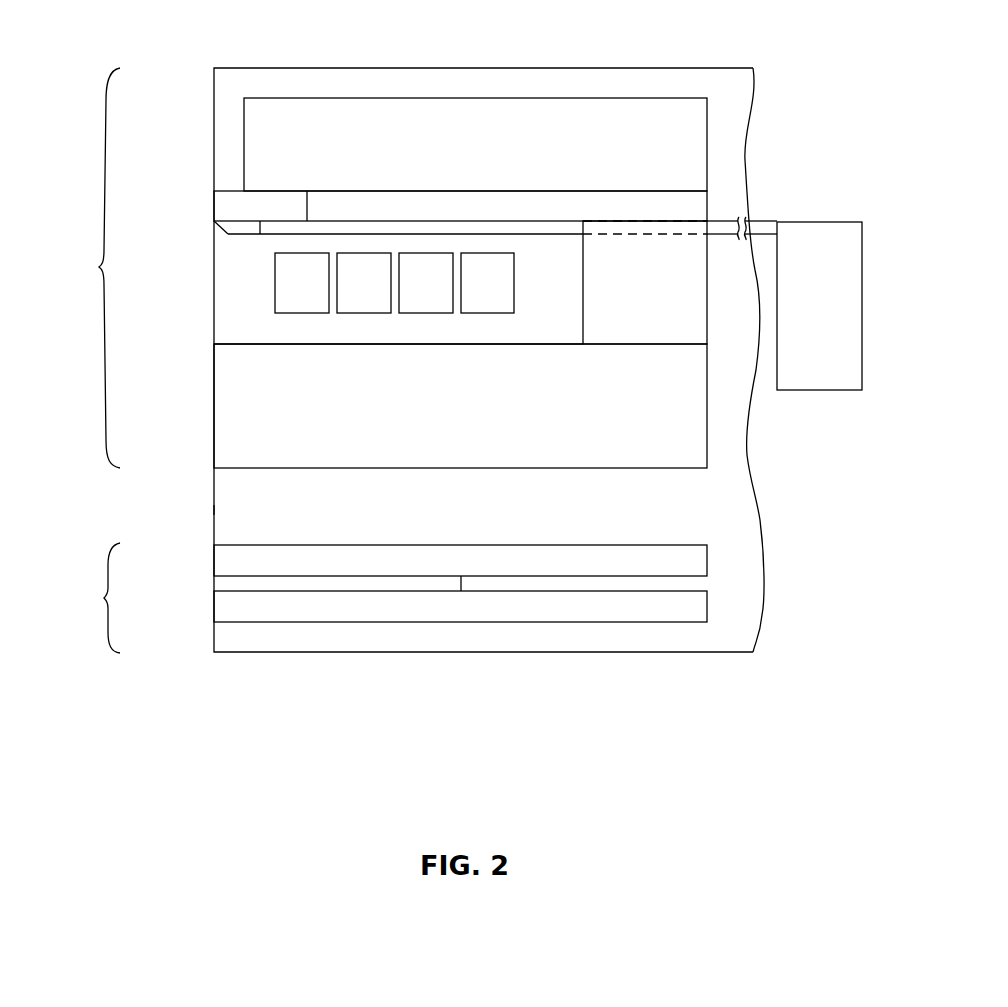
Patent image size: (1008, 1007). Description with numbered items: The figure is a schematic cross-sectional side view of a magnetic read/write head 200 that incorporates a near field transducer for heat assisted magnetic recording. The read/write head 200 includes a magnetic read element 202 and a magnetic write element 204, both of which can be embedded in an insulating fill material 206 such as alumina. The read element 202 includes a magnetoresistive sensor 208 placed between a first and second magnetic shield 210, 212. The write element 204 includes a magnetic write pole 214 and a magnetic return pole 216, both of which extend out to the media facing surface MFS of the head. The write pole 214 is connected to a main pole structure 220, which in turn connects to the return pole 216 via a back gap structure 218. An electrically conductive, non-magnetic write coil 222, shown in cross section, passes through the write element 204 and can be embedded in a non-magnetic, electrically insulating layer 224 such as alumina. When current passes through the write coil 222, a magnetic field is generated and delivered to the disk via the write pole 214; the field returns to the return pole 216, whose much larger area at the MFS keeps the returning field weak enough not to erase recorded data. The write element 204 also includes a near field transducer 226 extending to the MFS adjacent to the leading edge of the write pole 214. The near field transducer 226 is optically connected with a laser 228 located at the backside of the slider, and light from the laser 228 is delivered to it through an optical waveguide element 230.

The magnetic read/write head 200 is at (465, 67).
The magnetic read element 202 is at (108, 546).
The magnetic write element 204 is at (107, 70).
The insulating fill material 206 is at (498, 505).
The magnetoresistive sensor 208 is at (327, 583).
The first magnetic shield 210 is at (502, 604).
The second magnetic shield 212 is at (500, 559).
The magnetic write pole 214 is at (232, 207).
The magnetic return pole 216 is at (503, 404).
The back gap structure 218 is at (608, 269).
The main pole structure 220 is at (518, 142).
The write coil 222 is at (319, 293).
The electrically insulating layer 224 is at (450, 331).
The near field transducer 226 is at (239, 228).
The laser 228 is at (810, 236).
The optical waveguide element 230 is at (513, 229).
The media facing surface MFS is at (213, 513).